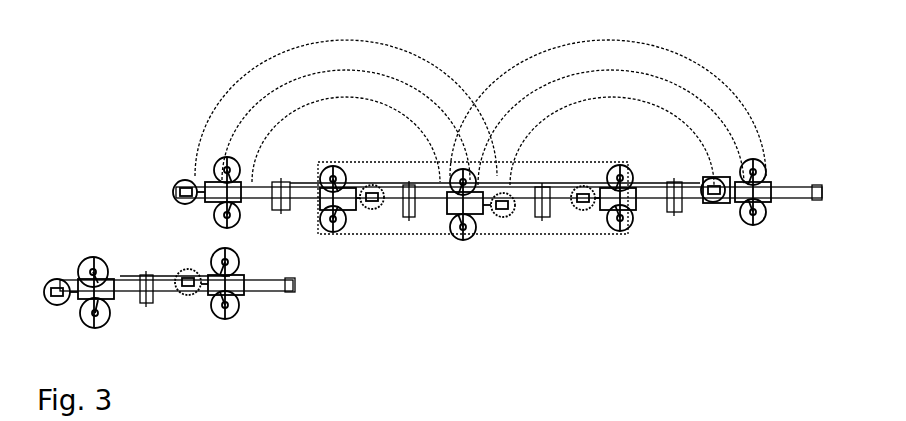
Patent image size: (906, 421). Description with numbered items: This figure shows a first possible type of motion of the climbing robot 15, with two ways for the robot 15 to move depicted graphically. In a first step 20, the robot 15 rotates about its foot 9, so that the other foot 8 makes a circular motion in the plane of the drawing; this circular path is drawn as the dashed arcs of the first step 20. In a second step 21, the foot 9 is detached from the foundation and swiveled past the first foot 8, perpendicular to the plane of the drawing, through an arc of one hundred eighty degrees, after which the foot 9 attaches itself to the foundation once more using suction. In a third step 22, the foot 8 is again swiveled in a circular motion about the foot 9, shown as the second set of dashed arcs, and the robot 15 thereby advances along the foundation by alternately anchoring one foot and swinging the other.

The foot 8 is at (487, 203).
The foot 9 is at (498, 230).
The robot 15 is at (169, 318).
The first step 20 is at (346, 97).
The second step 21 is at (473, 235).
The third step 22 is at (611, 107).